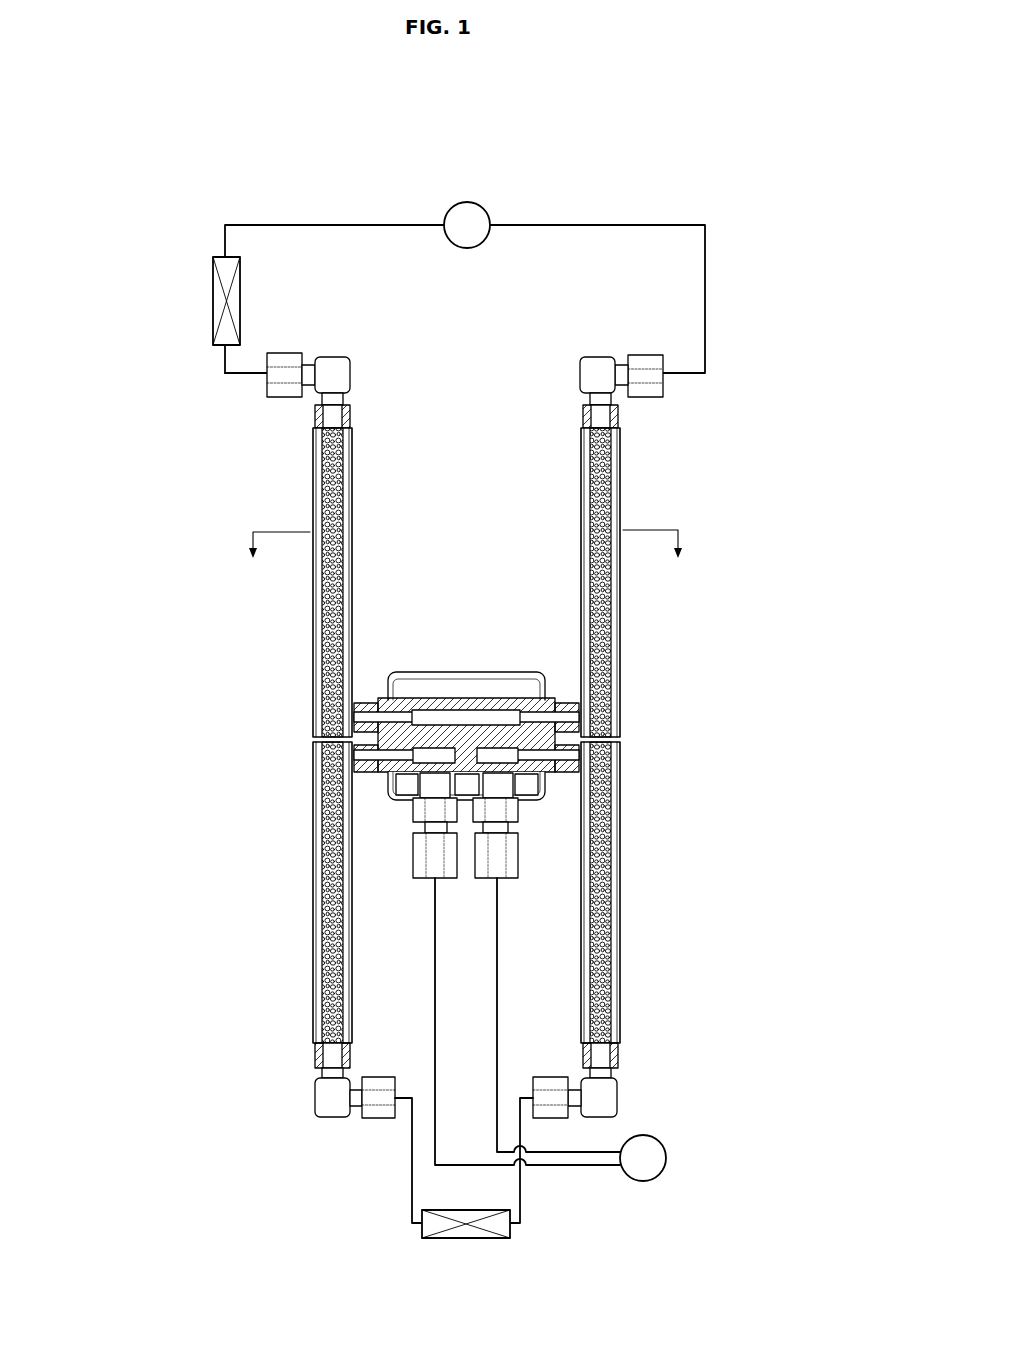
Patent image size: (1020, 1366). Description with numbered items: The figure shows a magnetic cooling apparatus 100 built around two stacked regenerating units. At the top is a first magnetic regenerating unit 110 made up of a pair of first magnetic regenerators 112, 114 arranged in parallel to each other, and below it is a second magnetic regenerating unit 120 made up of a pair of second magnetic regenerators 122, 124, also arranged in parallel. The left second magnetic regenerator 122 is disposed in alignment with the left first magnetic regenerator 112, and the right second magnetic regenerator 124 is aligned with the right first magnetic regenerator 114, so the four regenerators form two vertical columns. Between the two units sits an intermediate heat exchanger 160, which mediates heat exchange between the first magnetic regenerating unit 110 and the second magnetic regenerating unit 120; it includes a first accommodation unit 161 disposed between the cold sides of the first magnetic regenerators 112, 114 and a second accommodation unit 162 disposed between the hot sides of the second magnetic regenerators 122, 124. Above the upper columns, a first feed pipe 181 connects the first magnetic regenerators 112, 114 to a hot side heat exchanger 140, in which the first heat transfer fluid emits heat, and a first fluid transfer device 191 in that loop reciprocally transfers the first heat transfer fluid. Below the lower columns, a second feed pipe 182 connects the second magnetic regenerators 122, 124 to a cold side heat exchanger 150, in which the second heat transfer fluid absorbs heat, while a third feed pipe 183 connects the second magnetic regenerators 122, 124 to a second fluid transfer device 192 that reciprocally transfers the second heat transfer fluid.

The magnetic cooling apparatus 100 is at (330, 158).
The first magnetic regenerating unit 110 is at (468, 571).
The first magnetic regenerator 112 is at (302, 482).
The first magnetic regenerator 114 is at (631, 482).
The second magnetic regenerating unit 120 is at (469, 905).
The second magnetic regenerator 122 is at (301, 934).
The second magnetic regenerator 124 is at (631, 934).
The hot side heat exchanger 140 is at (205, 301).
The cold side heat exchanger 150 is at (469, 1249).
The intermediate heat exchanger 160 is at (464, 665).
The first accommodation unit 161 is at (437, 710).
The second accommodation unit 162 is at (486, 754).
The first feed pipe 181 is at (577, 225).
The second feed pipe 182 is at (412, 1170).
The third feed pipe 183 is at (497, 1013).
The first fluid transfer device 191 is at (476, 198).
The second fluid transfer device 192 is at (678, 1139).